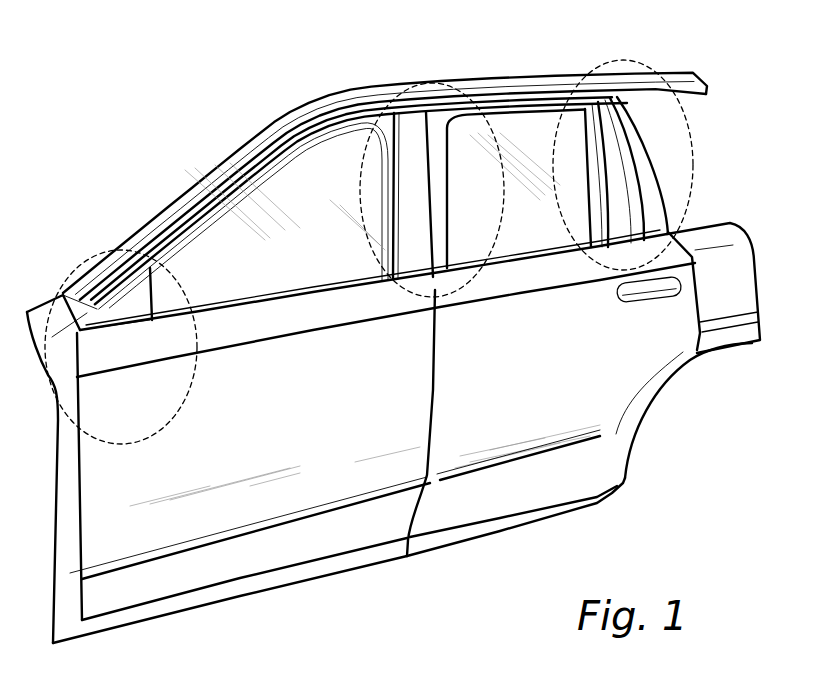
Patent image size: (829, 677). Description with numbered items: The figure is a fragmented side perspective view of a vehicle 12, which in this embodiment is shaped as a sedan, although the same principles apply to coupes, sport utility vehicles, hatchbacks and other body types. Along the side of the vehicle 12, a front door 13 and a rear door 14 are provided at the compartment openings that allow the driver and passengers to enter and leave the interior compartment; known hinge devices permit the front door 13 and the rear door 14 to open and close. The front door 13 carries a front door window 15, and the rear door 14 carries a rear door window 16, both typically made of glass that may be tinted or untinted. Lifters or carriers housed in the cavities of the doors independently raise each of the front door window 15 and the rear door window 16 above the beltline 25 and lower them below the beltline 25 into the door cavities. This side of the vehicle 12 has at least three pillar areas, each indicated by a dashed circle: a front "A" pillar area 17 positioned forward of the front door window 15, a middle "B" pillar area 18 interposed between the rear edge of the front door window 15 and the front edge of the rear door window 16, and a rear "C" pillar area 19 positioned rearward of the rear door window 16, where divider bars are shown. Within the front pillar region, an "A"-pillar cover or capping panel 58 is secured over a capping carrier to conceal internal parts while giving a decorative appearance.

The vehicle 12 is at (410, 326).
The front door 13 is at (274, 433).
The rear door 14 is at (560, 410).
The front door window 15 is at (258, 250).
The rear door window 16 is at (543, 224).
The front "A" pillar area 17 is at (92, 255).
The middle "B" pillar area 18 is at (362, 175).
The rear "C" pillar area 19 is at (695, 165).
The beltline 25 is at (277, 293).
The "A"-pillar cover or capping panel 58 is at (120, 310).